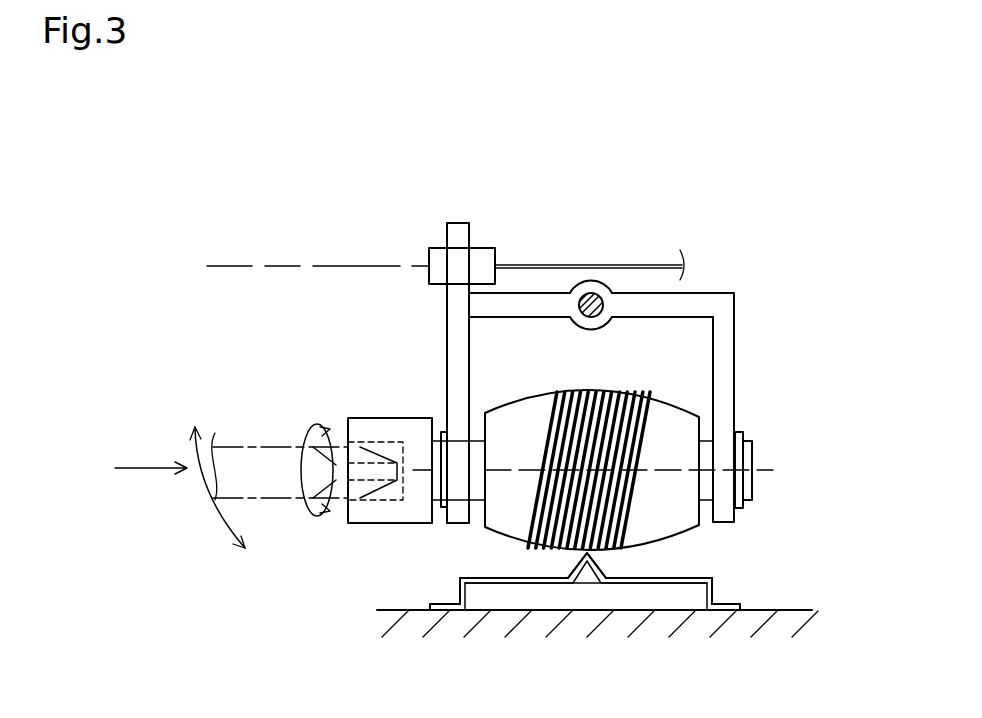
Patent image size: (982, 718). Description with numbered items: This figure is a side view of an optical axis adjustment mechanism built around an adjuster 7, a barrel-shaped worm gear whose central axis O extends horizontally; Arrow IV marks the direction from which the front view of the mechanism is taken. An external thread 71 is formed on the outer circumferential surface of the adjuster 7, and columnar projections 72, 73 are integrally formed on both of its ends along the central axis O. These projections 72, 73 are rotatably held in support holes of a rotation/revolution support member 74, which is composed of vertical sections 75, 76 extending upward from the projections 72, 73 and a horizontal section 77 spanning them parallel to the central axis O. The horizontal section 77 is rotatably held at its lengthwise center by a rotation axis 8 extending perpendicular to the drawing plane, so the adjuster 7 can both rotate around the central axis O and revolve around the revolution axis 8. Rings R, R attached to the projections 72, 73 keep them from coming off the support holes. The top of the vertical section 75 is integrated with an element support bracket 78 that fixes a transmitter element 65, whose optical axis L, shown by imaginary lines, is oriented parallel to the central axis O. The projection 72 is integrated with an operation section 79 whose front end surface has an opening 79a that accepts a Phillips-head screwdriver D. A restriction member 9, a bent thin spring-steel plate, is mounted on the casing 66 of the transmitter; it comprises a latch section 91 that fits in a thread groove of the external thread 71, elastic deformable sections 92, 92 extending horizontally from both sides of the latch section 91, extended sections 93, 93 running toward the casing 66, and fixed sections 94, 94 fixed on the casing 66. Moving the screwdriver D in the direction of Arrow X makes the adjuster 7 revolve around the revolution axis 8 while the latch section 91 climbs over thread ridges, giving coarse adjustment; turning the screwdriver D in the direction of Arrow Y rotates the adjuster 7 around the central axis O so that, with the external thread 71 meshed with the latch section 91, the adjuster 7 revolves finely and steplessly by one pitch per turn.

The adjuster 7 is at (695, 532).
The rotation axis 8 is at (585, 295).
The restriction member 9 is at (667, 586).
The transmitter element 65 is at (428, 258).
The casing 66 is at (775, 610).
The external thread 71 is at (600, 392).
The projection 72 is at (480, 478).
The projection 73 is at (748, 462).
The rotation/revolution support member 74 is at (738, 310).
The vertical section 75 is at (453, 370).
The vertical section 76 is at (727, 387).
The horizontal section 77 is at (690, 302).
The element support bracket 78 is at (458, 230).
The operation section 79 is at (373, 523).
The opening 79a is at (385, 442).
The latch section 91 is at (572, 580).
The elastic deformable section 92 is at (520, 583).
The extended section 93 is at (457, 584).
The fixed section 94 is at (447, 613).
The ring R is at (440, 510).
The optical axis L is at (258, 262).
The central axis O is at (773, 470).
The Phillips-head screwdriver D is at (287, 445).
The Arrow X is at (223, 527).
The Arrow Y is at (303, 510).
The Arrow IV is at (141, 453).